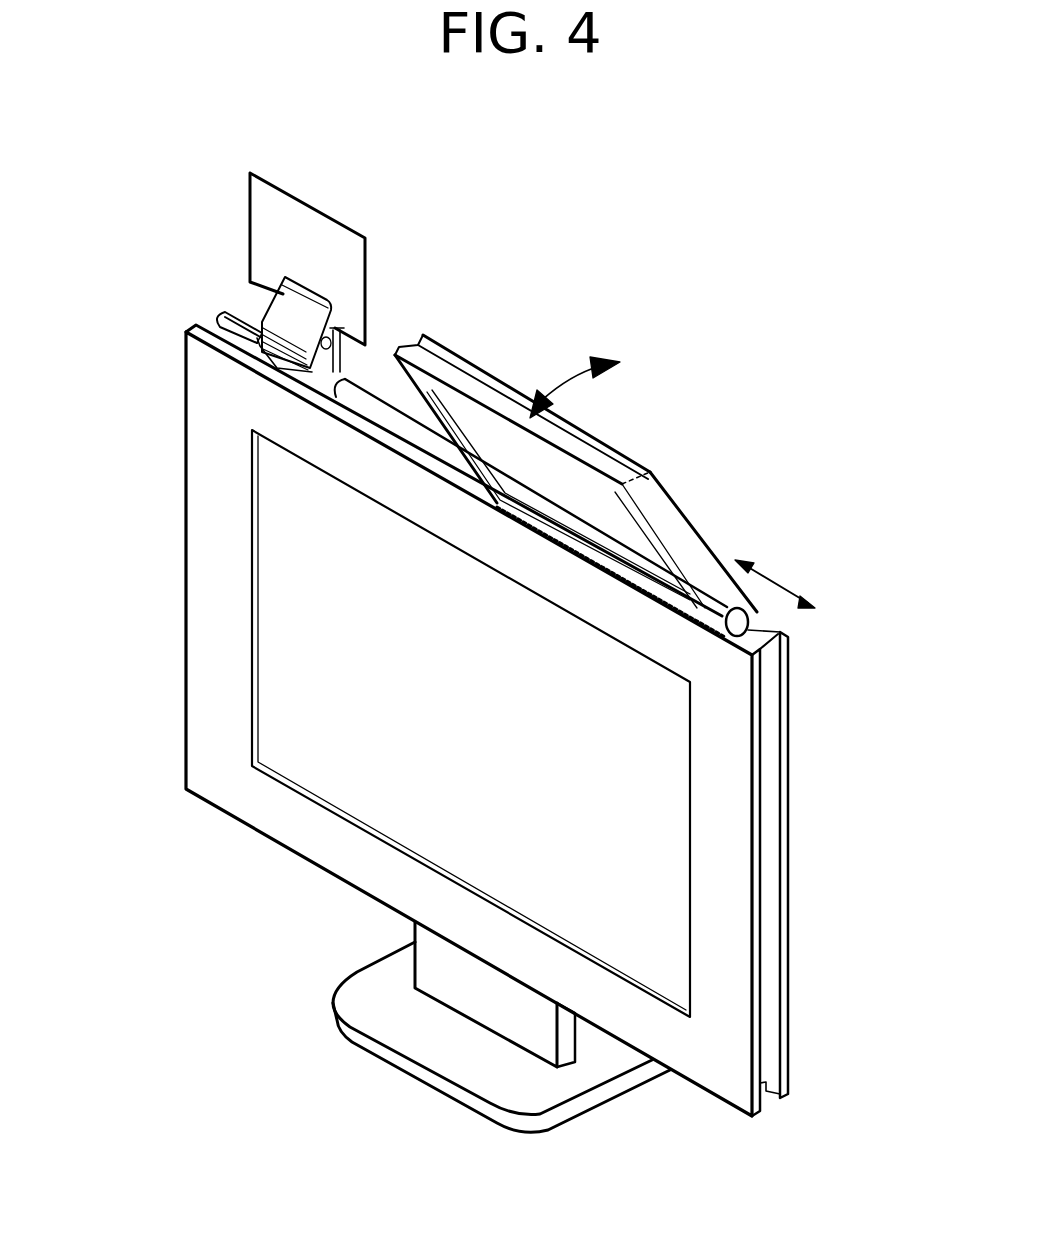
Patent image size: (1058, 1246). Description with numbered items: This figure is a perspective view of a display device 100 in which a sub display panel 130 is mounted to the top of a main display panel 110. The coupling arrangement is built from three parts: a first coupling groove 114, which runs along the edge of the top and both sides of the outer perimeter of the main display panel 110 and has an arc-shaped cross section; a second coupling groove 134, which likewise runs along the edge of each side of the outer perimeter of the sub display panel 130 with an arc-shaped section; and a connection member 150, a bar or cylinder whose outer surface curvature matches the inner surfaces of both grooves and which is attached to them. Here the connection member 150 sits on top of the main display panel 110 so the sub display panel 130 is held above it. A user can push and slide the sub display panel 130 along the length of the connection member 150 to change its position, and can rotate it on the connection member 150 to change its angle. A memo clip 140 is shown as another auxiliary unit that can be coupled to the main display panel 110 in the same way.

The display device 100 is at (878, 274).
The main display panel 110 is at (198, 729).
The first coupling groove 114 is at (770, 847).
The sub display panel 130 is at (665, 468).
The second coupling groove 134 is at (463, 382).
The memo clip 140 is at (243, 237).
The connection member 150 is at (760, 631).